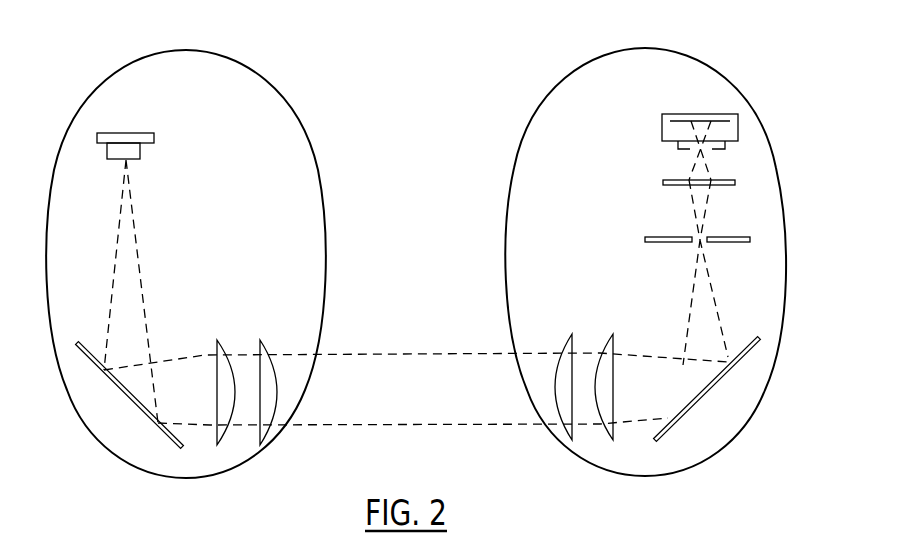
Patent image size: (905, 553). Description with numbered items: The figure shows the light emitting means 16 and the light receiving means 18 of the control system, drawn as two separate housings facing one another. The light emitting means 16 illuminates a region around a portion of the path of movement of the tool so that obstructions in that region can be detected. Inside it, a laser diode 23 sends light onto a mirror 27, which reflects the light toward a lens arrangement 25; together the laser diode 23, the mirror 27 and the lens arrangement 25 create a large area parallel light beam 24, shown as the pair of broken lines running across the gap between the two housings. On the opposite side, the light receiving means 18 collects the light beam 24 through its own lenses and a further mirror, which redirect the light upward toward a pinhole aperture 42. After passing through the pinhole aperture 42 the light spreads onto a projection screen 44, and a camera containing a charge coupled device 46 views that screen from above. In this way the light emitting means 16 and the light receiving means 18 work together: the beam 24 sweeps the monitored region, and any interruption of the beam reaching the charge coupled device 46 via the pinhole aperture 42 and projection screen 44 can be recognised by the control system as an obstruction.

The light emitting means 16 is at (263, 176).
The light receiving means 18 is at (553, 237).
The laser diode 23 is at (155, 139).
The mirror 27 is at (120, 393).
The lens system 25 is at (240, 435).
The large area parallel light beam 24 is at (388, 368).
The charge coupled device (CCD) 46 is at (738, 122).
The projection screen 44 is at (665, 183).
The pinhole aperture 42 is at (699, 243).